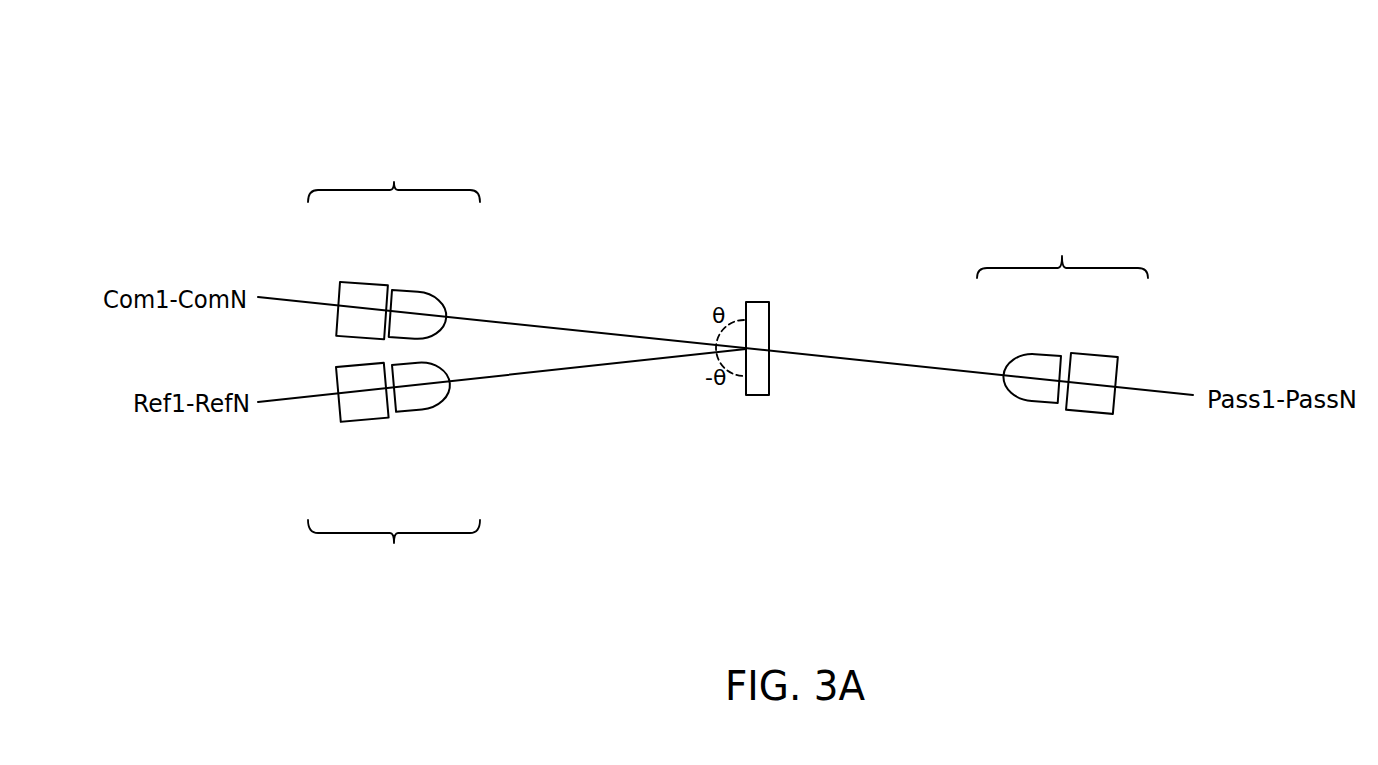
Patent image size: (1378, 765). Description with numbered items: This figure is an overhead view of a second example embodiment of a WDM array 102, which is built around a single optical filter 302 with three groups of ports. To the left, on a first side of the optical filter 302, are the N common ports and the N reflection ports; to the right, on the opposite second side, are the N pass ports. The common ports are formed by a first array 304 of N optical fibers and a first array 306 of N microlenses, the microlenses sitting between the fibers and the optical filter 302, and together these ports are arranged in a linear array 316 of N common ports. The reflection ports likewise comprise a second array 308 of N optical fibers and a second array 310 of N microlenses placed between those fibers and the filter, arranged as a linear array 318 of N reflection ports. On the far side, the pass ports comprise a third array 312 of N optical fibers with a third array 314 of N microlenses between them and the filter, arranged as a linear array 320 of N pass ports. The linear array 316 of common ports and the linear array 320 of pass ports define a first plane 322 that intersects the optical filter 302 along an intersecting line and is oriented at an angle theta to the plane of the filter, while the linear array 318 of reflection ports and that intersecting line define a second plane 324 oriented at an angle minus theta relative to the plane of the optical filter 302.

The WDM array 102 is at (1072, 86).
The optical filter 302 is at (757, 302).
The first array of N optical fibers 304 is at (351, 262).
The first array of N microlenses 306 is at (436, 262).
The second array of N optical fibers 308 is at (356, 443).
The second array of N microlenses 310 is at (437, 443).
The third array of N optical fibers 312 is at (1103, 338).
The third array of N microlenses 314 is at (1020, 338).
The linear array of N common ports 316 is at (394, 175).
The linear array of N reflection ports 318 is at (394, 549).
The linear array of N pass ports 320 is at (1062, 251).
The first plane 322 is at (520, 322).
The second plane 324 is at (522, 373).